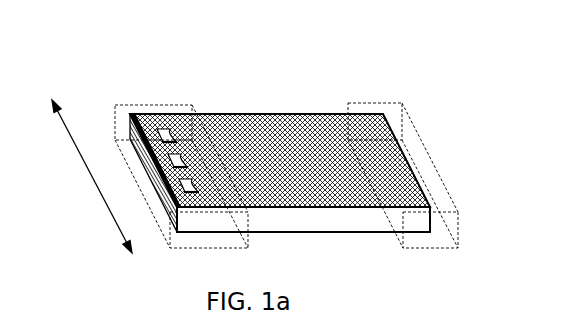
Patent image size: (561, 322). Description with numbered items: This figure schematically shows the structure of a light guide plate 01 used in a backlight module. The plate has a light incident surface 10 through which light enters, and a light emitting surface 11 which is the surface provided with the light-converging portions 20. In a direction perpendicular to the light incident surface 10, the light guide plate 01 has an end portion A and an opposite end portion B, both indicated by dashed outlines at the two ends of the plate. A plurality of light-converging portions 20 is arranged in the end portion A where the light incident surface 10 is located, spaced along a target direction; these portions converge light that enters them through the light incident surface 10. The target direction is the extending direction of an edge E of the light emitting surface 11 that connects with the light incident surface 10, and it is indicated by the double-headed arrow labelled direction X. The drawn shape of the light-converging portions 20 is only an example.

The light guide plate 01 is at (358, 90).
The light incident surface 10 is at (158, 175).
The light emitting surface 11 is at (282, 123).
The light-converging portions 20 is at (167, 128).
The end portion A is at (132, 105).
The end portion B is at (390, 102).
The edge E is at (130, 118).
The direction X is at (92, 176).